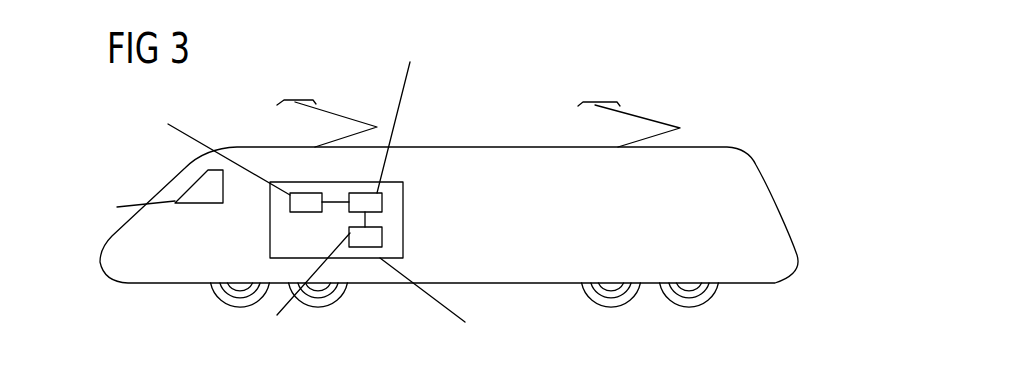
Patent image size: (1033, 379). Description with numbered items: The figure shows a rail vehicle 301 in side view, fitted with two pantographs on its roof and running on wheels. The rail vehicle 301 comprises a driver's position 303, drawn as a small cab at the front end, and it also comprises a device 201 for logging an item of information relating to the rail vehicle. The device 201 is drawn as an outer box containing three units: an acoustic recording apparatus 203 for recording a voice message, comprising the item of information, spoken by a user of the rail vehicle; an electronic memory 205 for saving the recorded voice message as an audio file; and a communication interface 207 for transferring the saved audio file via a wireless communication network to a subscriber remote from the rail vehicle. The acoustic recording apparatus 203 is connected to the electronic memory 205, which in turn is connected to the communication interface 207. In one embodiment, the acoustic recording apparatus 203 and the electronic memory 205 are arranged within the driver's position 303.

The rail vehicle 301 is at (482, 146).
The driver's position 303 is at (197, 190).
The device for logging an item of information 201 is at (270, 243).
The acoustic recording apparatus 203 is at (270, 202).
The electronic memory 205 is at (382, 200).
The communication interface 207 is at (382, 236).